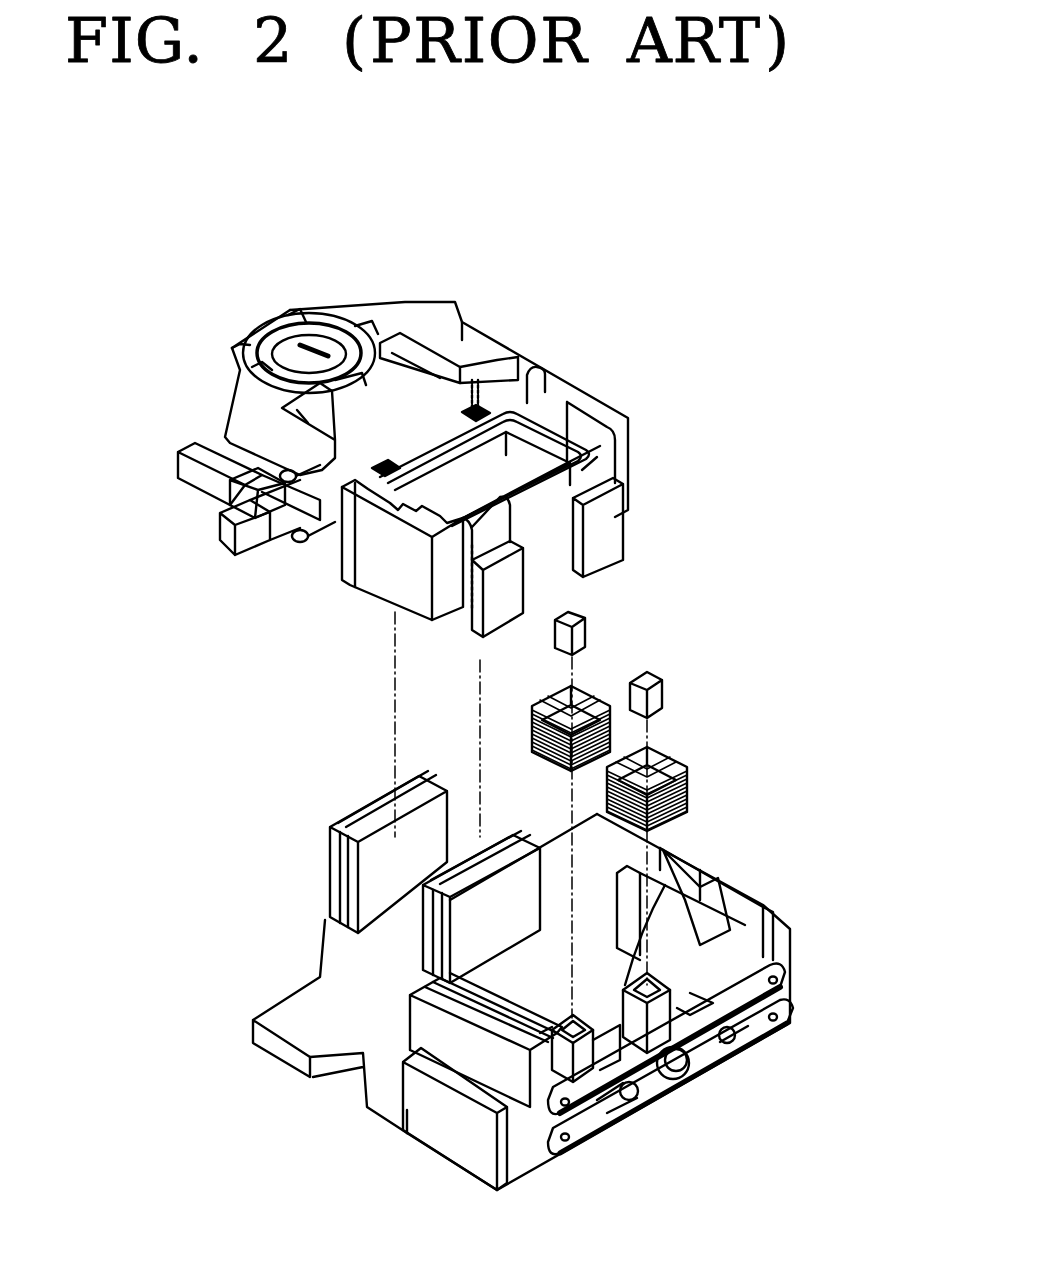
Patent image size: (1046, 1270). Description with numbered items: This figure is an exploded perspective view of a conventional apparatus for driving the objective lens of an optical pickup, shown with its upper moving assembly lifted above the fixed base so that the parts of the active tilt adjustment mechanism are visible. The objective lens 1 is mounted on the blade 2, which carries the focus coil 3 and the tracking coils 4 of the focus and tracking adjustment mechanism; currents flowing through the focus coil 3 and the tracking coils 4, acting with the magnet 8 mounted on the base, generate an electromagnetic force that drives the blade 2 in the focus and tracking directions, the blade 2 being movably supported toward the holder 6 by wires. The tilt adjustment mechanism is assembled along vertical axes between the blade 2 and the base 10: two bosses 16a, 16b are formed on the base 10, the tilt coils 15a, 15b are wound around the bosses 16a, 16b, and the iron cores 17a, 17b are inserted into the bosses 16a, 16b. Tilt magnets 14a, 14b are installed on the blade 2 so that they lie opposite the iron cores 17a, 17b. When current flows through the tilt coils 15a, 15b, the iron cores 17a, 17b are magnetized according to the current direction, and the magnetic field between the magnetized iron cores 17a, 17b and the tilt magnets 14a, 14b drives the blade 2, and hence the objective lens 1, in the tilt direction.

The objective lens 1 is at (322, 338).
The blade 2 is at (458, 466).
The focus coil 3 is at (540, 430).
The tracking coils 4 is at (474, 408).
The holder 6 is at (707, 1055).
The magnet 8 is at (448, 842).
The base 10 is at (508, 952).
The tilt magnet 14a is at (473, 630).
The tilt magnet 14b is at (615, 545).
The tilt coil 15a is at (597, 690).
The tilt coil 15b is at (685, 790).
The boss 16a is at (568, 1022).
The boss 16b is at (655, 990).
The iron core 17a is at (585, 636).
The iron core 17b is at (660, 690).